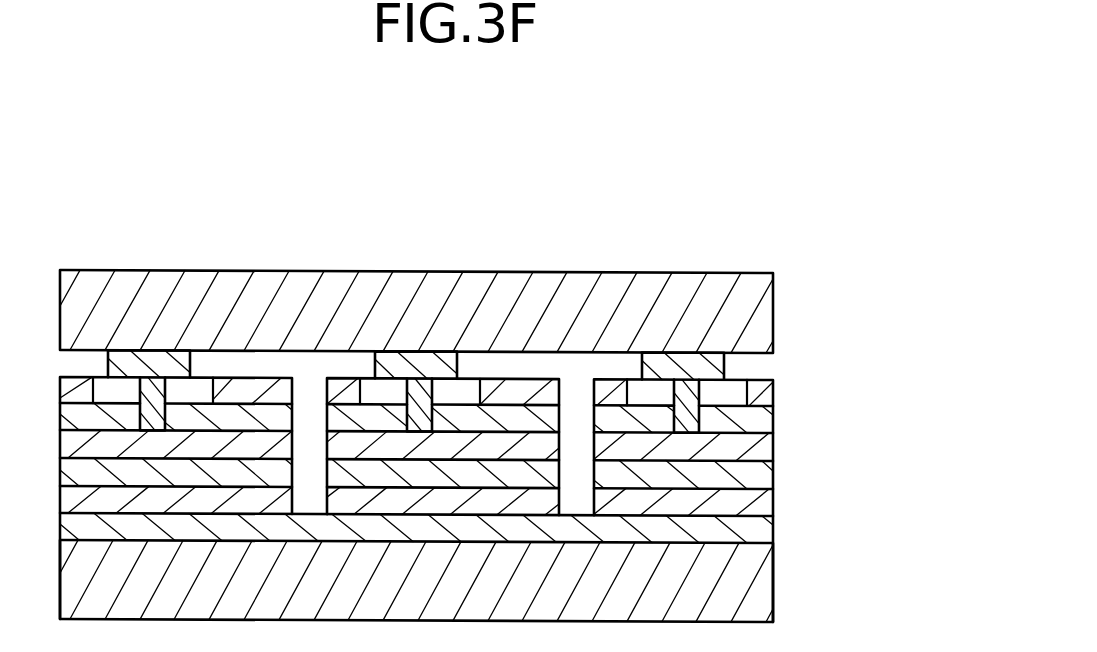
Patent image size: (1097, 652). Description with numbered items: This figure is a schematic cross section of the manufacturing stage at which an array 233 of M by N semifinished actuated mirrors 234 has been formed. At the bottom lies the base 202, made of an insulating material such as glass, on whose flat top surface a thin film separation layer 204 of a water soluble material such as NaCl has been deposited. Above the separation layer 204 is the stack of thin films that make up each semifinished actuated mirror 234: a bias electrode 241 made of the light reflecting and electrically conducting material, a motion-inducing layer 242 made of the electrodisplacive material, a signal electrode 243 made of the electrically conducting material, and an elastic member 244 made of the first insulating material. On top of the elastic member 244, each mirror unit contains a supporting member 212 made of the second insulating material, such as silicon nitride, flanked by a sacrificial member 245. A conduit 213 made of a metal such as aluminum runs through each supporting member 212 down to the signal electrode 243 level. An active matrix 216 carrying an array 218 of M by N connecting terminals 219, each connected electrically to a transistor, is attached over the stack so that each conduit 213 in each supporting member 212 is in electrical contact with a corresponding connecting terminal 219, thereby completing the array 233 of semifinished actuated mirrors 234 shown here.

The base 202 is at (748, 585).
The thin film separation layer 204 is at (757, 535).
The supporting member 212 is at (190, 392).
The conduit 213 is at (150, 388).
The active matrix 216 is at (797, 273).
The array of connecting terminals 218 is at (58, 377).
The connecting terminal 219 is at (128, 362).
The array of semifinished actuated mirrors 233 is at (742, 133).
The semifinished actuated mirror 234 is at (288, 147).
The bias electrode 241 is at (758, 505).
The motion-inducing layer 242 is at (755, 478).
The signal electrode 243 is at (757, 450).
The elastic member 244 is at (757, 420).
The sacrificial member 245 is at (253, 392).